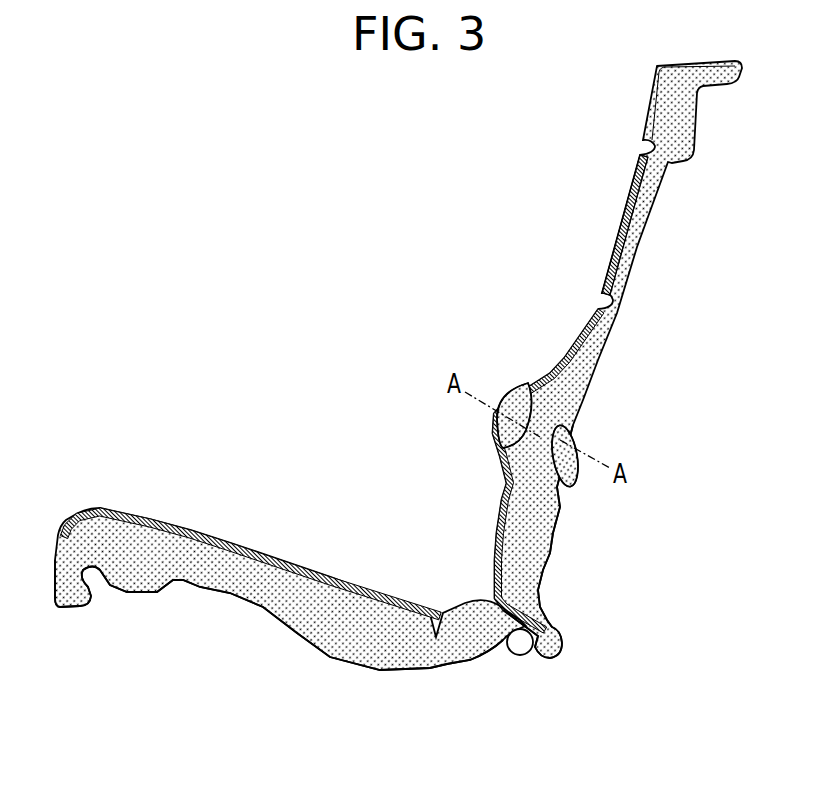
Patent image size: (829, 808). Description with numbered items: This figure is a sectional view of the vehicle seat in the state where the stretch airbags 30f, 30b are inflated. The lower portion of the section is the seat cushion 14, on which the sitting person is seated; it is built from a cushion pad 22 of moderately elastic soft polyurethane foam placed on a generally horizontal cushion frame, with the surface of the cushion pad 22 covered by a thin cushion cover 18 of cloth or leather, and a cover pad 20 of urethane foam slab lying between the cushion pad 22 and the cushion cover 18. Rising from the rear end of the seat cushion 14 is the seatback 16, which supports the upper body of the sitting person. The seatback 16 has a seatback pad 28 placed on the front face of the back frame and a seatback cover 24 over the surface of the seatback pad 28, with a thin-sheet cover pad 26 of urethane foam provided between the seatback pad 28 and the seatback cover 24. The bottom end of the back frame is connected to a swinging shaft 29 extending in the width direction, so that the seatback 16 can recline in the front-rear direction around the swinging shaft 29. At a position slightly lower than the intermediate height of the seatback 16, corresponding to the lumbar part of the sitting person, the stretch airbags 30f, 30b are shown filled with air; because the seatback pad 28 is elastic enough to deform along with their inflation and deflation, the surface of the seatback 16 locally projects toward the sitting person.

The seat cushion 14 is at (290, 595).
The seatback 16 is at (603, 359).
The cushion cover 18 is at (283, 557).
The cover pad 20 is at (210, 532).
The cushion pad 22 is at (305, 623).
The seatback cover 24 is at (633, 180).
The cover pad 26 is at (611, 256).
The seatback pad 28 is at (558, 505).
The swinging shaft 29 is at (524, 655).
The stretch airbag 30f is at (517, 388).
The stretch airbag 30b is at (578, 438).